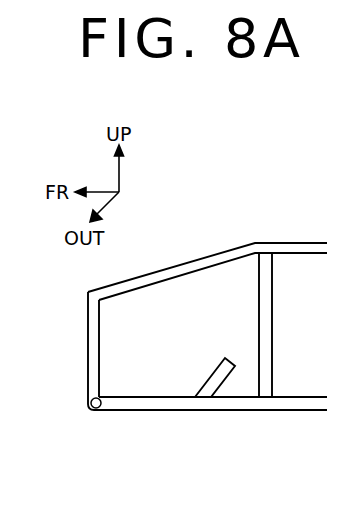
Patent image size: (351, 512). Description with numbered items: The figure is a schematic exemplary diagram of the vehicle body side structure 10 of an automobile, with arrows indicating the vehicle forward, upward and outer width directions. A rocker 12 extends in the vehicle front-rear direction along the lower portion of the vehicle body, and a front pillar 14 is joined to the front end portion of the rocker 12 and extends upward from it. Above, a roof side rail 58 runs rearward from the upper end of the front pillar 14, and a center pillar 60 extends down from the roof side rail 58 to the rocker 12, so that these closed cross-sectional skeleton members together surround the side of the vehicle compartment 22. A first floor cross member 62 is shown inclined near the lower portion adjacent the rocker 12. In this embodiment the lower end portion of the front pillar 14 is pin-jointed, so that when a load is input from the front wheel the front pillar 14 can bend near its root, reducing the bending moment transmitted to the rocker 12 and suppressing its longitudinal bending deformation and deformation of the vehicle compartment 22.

The vehicle body side structure 10 is at (96, 438).
The rocker 12 is at (235, 410).
The front pillar 14 is at (88, 340).
The vehicle compartment 22 is at (193, 321).
The roof side rail 58 is at (232, 250).
The center pillar 60 is at (272, 326).
The first floor cross member 62 is at (209, 379).